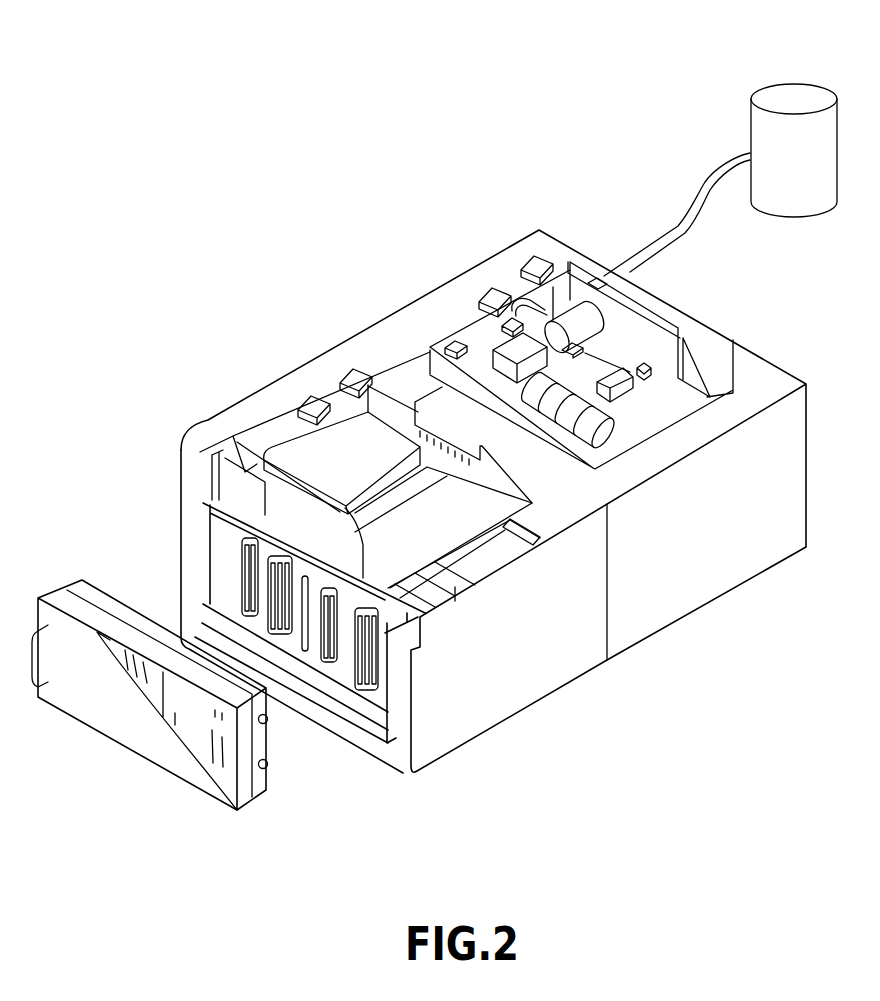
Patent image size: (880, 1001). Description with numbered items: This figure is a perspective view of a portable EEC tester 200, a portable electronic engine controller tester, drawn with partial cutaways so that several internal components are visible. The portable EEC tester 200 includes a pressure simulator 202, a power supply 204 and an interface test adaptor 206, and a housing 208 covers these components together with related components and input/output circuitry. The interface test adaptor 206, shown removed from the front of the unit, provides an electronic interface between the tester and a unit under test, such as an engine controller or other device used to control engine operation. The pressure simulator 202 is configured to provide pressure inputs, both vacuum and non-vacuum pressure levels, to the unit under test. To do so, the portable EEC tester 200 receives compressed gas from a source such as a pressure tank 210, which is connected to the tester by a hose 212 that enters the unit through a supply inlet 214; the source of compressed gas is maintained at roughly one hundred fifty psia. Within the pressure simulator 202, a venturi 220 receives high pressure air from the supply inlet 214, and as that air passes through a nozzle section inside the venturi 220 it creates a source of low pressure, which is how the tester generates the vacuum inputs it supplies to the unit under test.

The portable EEC tester 200 is at (176, 262).
The pressure simulator 202 is at (668, 406).
The power supply 204 is at (366, 465).
The interface test adaptor 206 is at (238, 805).
The housing 208 is at (481, 258).
The pressure tank 210 is at (763, 80).
The hose 212 is at (697, 190).
The supply inlet 214 is at (623, 273).
The venturi 220 is at (617, 373).